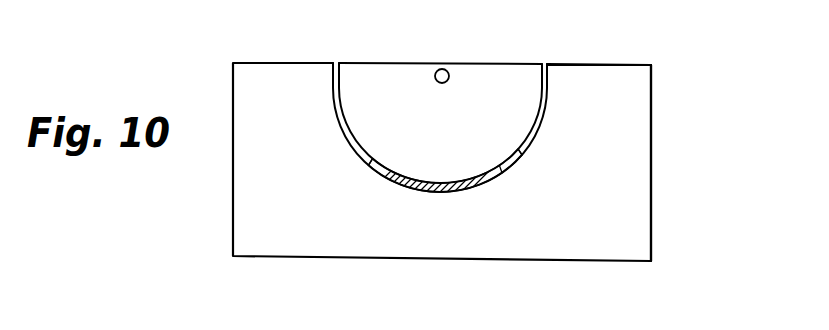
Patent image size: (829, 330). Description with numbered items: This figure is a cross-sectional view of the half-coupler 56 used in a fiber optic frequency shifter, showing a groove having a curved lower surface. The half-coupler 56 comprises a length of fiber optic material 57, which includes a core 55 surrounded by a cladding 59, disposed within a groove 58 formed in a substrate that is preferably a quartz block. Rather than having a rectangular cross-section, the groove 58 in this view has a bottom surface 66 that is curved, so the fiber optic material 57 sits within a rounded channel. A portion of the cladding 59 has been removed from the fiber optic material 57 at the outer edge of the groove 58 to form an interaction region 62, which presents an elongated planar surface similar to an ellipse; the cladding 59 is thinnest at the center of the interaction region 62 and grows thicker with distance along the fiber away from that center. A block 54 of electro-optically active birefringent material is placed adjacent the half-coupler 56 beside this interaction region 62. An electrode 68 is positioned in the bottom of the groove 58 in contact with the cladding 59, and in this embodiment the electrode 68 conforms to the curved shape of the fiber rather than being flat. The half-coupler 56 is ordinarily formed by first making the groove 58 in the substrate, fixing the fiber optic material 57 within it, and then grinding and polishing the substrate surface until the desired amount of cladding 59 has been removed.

The block 54 is at (652, 132).
The core 55 is at (445, 69).
The half-coupler 56 is at (218, 196).
The fiber optic material 57 is at (315, 105).
The groove 58 is at (521, 150).
The cladding 59 is at (514, 63).
The interaction region 62 is at (393, 49).
The bottom surface 66 is at (369, 162).
The electrode 68 is at (454, 191).